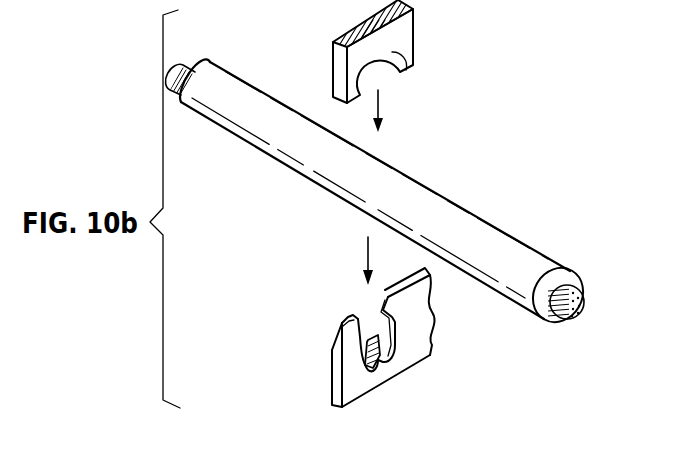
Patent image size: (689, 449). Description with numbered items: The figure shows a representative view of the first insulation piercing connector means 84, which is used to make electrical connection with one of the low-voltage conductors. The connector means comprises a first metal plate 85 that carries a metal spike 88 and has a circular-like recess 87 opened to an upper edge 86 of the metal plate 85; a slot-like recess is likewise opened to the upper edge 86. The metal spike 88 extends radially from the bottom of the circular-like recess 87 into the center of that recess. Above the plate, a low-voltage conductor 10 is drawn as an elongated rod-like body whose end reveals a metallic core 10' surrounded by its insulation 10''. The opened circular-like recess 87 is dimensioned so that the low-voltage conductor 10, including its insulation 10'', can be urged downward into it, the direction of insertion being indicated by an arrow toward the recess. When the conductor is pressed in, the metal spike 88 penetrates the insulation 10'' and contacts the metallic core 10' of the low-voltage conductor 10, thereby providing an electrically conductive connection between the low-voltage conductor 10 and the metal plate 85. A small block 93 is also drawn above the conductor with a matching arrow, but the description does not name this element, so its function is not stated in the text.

The low-voltage conductor 10 is at (371, 189).
The metallic core 10' is at (591, 277).
The insulation 10'' is at (550, 312).
The first insulation piercing connector means 84 is at (355, 280).
The first metal plate 85 is at (417, 350).
The upper edge 86 is at (342, 320).
The circular-like recess 87 is at (372, 320).
The metal spike 88 is at (373, 363).
The clamping block 93 is at (403, 43).